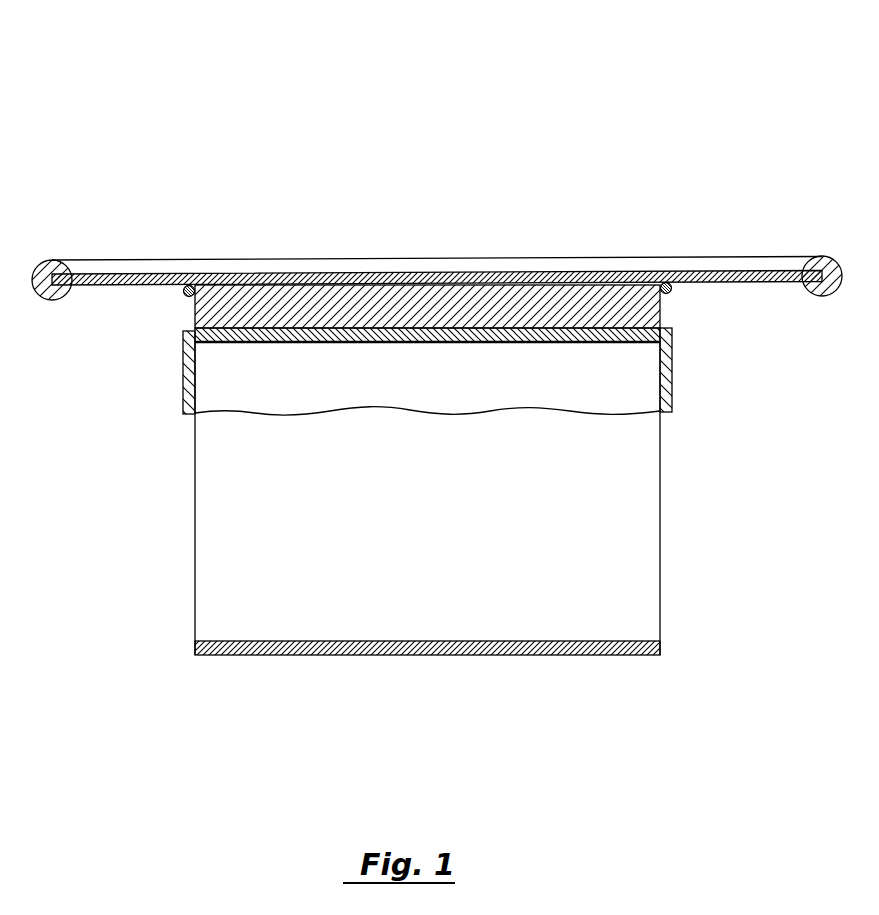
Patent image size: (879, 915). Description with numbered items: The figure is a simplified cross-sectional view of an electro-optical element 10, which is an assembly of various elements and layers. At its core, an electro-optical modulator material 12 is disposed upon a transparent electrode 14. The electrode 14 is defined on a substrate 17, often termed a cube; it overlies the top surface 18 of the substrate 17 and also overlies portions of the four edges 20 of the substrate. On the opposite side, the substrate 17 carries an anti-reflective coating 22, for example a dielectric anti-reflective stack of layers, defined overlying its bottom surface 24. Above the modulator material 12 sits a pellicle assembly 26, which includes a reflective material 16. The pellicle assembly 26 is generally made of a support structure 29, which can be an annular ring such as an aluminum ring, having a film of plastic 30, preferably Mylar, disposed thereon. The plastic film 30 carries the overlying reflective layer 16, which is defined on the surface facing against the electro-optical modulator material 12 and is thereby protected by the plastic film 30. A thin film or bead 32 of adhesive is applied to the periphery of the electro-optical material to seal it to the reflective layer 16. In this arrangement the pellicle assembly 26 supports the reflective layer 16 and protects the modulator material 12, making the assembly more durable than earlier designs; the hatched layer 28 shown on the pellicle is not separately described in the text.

The electro-optical element 10 is at (655, 115).
The electro-optical modulator material 12 is at (660, 317).
The transparent electrode 14 is at (183, 347).
The reflective material 16 is at (317, 276).
The substrate 17 is at (572, 495).
The top surface 18 is at (620, 342).
The edges 20 is at (252, 388).
The anti-reflective coating 22 is at (470, 683).
The bottom surface 24 is at (555, 640).
The pellicle assembly 26 is at (722, 258).
The hatched layer 28 is at (405, 276).
The support structure 29 is at (825, 296).
The film of plastic 30 is at (529, 257).
The bead of adhesive 32 is at (183, 297).